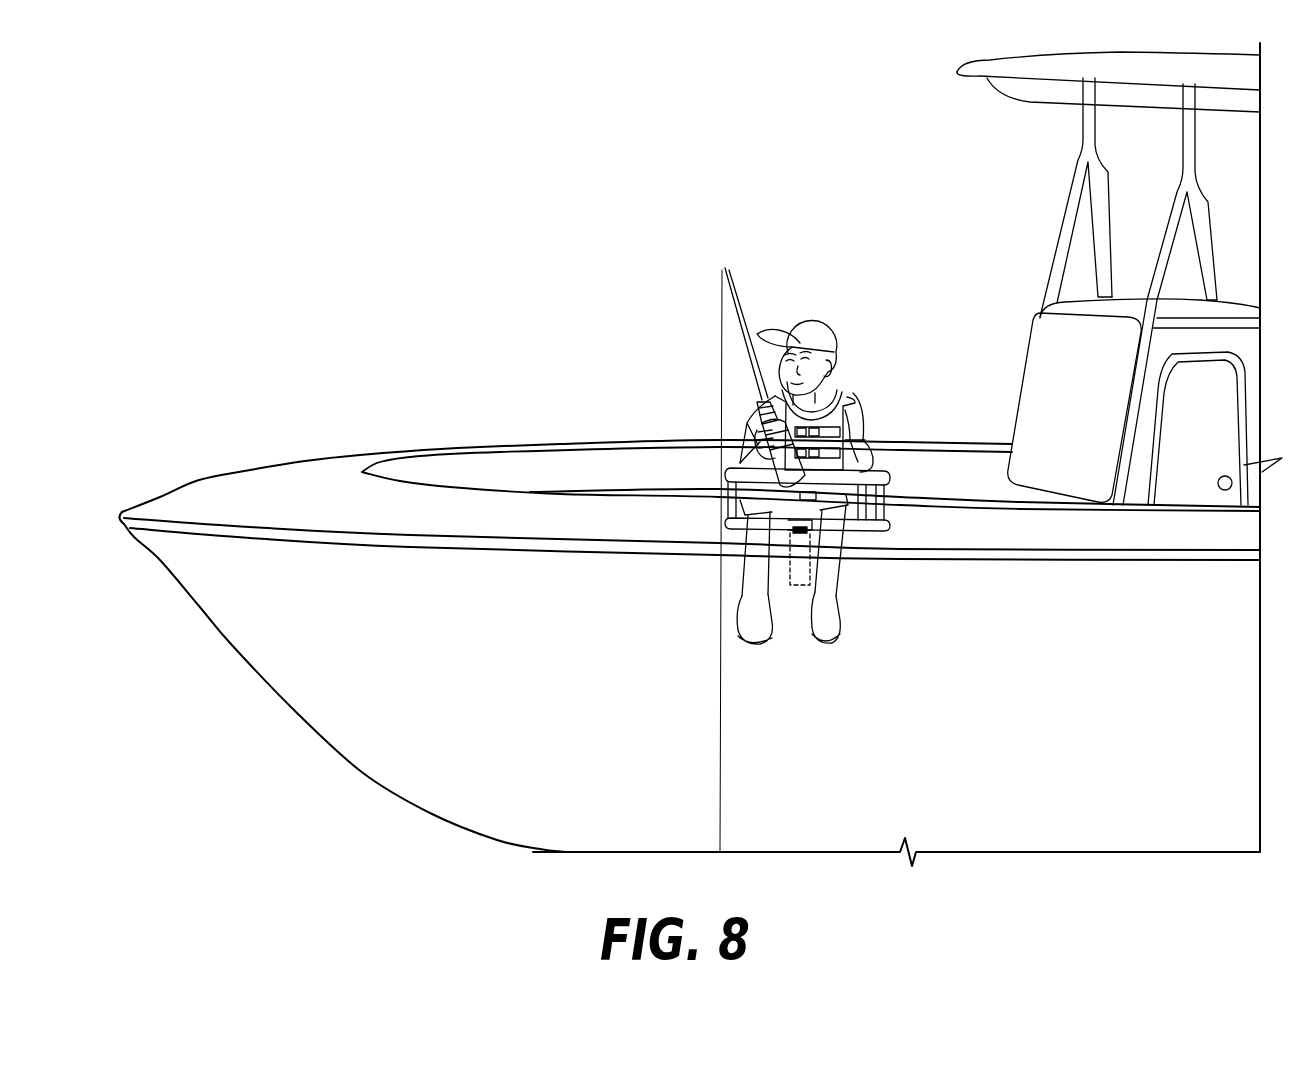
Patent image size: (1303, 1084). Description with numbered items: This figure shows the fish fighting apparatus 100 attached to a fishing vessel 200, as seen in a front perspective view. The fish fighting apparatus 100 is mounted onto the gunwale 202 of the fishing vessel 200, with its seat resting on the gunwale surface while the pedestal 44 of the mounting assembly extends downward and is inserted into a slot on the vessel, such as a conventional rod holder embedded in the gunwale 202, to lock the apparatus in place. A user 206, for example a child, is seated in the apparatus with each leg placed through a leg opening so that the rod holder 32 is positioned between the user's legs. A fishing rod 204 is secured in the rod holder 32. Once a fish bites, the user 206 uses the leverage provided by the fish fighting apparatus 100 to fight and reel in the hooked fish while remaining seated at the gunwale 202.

The fishing vessel 200 is at (1020, 294).
The gunwale 202 is at (428, 505).
The fishing rod 204 is at (735, 306).
The user 206 is at (807, 311).
The fish fighting apparatus 100 is at (887, 501).
The rod holder 32 is at (808, 498).
The pedestal 44 is at (812, 572).